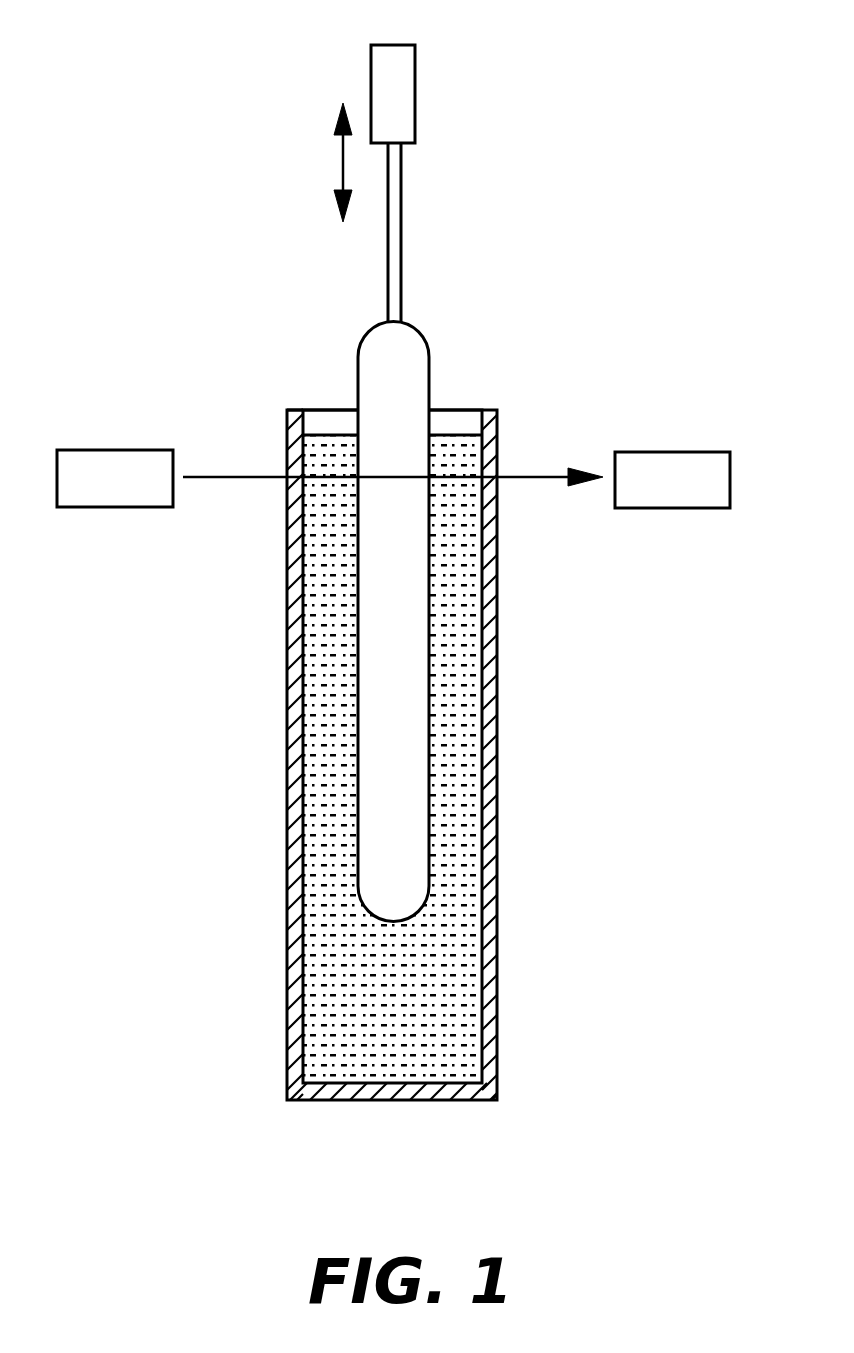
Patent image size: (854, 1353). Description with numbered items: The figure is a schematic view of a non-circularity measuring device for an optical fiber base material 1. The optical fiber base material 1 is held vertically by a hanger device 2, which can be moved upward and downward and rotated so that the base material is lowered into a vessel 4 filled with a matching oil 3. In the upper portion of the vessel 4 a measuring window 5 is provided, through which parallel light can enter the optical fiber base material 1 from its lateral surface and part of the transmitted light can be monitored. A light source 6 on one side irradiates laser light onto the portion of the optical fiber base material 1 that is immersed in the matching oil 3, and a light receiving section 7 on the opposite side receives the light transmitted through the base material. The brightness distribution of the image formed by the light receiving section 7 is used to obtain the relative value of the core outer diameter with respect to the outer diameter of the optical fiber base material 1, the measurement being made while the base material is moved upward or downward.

The optical fiber base material 1 is at (407, 377).
The hanger device 2 is at (403, 93).
The matching oil 3 is at (448, 995).
The vessel 4 is at (497, 735).
The measuring window 5 is at (302, 407).
The light source 6 is at (115, 463).
The light receiving section 7 is at (672, 467).